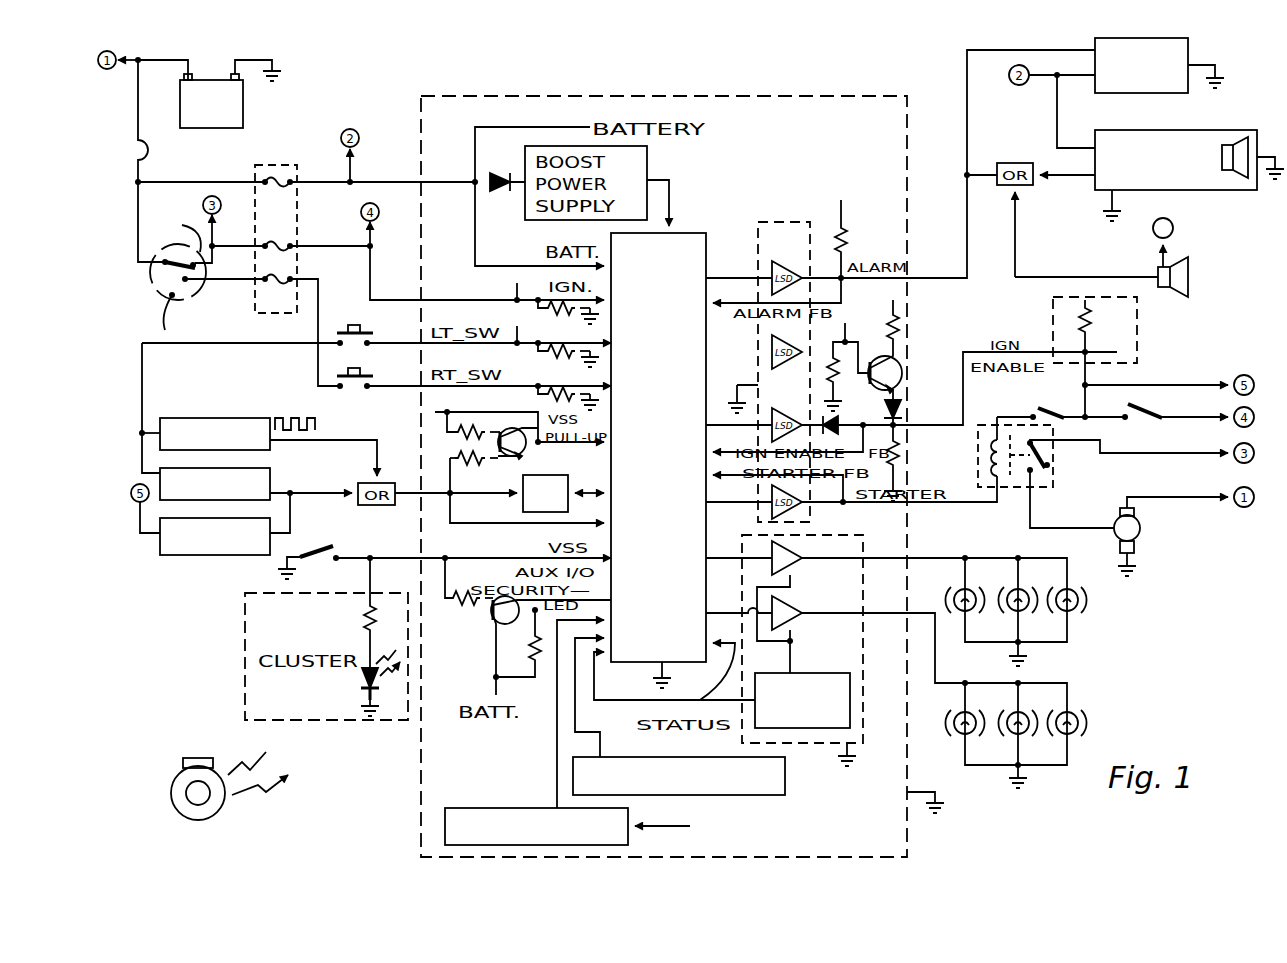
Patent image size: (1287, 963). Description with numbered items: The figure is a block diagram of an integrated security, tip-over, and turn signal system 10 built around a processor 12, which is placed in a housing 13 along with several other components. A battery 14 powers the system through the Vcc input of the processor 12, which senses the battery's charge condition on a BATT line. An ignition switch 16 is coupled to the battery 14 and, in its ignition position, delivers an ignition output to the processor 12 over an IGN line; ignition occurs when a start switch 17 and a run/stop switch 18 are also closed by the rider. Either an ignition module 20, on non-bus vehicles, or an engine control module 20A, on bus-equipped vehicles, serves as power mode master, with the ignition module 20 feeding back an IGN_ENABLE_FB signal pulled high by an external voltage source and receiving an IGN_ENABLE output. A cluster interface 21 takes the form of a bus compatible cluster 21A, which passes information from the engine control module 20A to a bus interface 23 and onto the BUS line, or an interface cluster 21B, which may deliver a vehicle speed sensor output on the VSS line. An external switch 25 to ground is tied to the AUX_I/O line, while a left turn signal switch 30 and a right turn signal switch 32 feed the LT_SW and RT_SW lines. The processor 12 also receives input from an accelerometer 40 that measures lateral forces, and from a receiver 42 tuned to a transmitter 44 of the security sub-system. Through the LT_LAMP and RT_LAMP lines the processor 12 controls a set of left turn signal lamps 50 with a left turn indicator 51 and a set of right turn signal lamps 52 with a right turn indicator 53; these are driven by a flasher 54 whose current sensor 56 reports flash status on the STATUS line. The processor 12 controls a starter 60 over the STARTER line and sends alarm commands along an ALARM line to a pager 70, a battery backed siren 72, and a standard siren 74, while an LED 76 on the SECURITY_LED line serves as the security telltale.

The integrated security, tip-over, and turn signal system 10 is at (868, 70).
The processor 12 is at (693, 235).
The housing 13 is at (762, 96).
The battery 14 is at (216, 128).
The ignition switch 16 is at (148, 285).
The start switch 17 is at (1066, 420).
The run/stop switch 18 is at (1158, 408).
The ignition module 20 is at (1130, 345).
The engine control module 20A is at (197, 548).
The cluster interface 21 is at (130, 470).
The bus compatible cluster 21A is at (270, 476).
The interface cluster 21B is at (245, 418).
The bus interface 23 is at (521, 481).
The external switch 25 is at (318, 553).
The left turn signal switch 30 is at (354, 325).
The right turn signal switch 32 is at (372, 374).
The accelerometer 40 is at (682, 757).
The receiver 42 is at (500, 806).
The transmitter 44 is at (198, 758).
The set of left turn signal lamps 50 is at (1076, 560).
The left turn indicator 51 is at (1102, 600).
The set of right turn signal lamps 52 is at (996, 774).
The right turn indicator 53 is at (1106, 718).
The flasher 54 is at (863, 730).
The current sensor 56 is at (833, 673).
The starter 60 is at (1142, 528).
The pager 70 is at (1190, 46).
The battery backed siren 72 is at (1232, 130).
The standard siren 74 is at (1190, 277).
The LED 76 is at (352, 685).